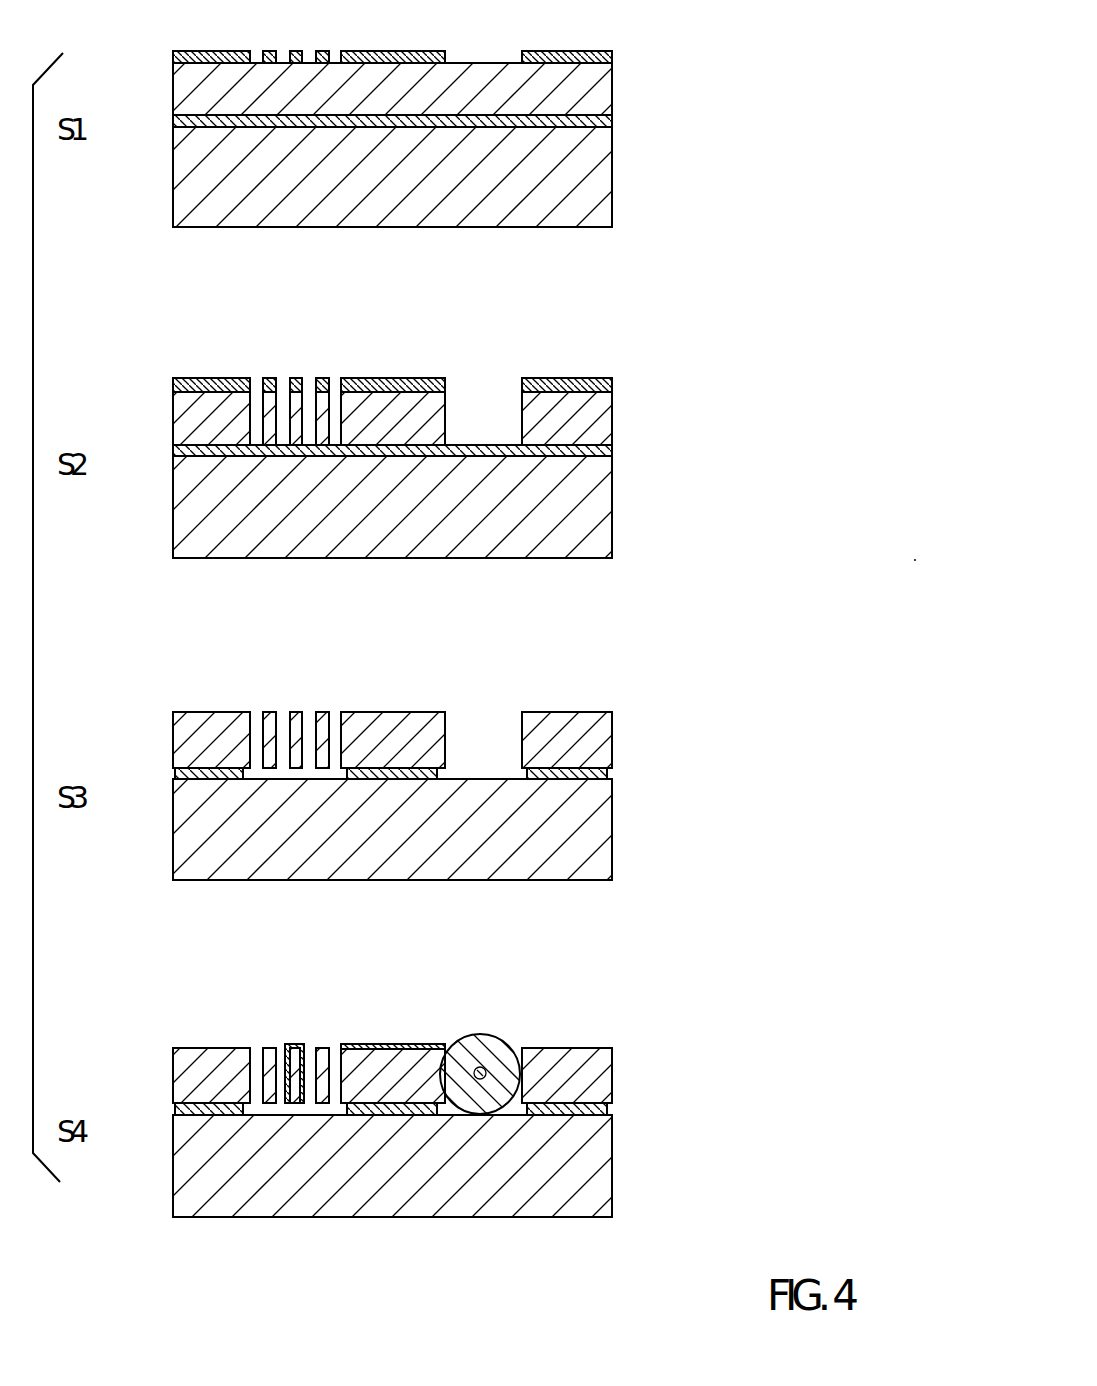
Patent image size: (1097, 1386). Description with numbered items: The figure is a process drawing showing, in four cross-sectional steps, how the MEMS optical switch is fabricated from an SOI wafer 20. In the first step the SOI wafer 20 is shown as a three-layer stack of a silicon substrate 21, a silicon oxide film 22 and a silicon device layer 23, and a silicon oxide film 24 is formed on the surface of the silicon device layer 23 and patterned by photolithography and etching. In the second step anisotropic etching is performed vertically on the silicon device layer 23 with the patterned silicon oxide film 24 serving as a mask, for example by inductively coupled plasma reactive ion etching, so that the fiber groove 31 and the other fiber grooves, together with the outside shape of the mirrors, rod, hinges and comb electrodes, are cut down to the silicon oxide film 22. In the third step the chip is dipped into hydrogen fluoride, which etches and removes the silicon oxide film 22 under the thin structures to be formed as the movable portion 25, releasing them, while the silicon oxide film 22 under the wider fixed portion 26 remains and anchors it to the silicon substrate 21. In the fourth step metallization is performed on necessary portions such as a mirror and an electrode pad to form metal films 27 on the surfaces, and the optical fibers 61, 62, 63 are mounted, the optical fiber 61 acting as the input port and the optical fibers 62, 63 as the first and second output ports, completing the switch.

The SOI wafer 20 is at (685, 75).
The silicon substrate 21 is at (613, 186).
The silicon oxide film 22 is at (613, 121).
The silicon device layer 23 is at (506, 583).
The silicon oxide film 24 is at (565, 52).
The movable portion 25 is at (293, 712).
The fixed portion 26 is at (402, 712).
The metal film 27 is at (365, 1022).
The fiber groove 31 is at (542, 386).
The optical fiber 61 is at (485, 1046).
The optical fiber 62 is at (480, 1074).
The optical fiber 63 is at (490, 1036).